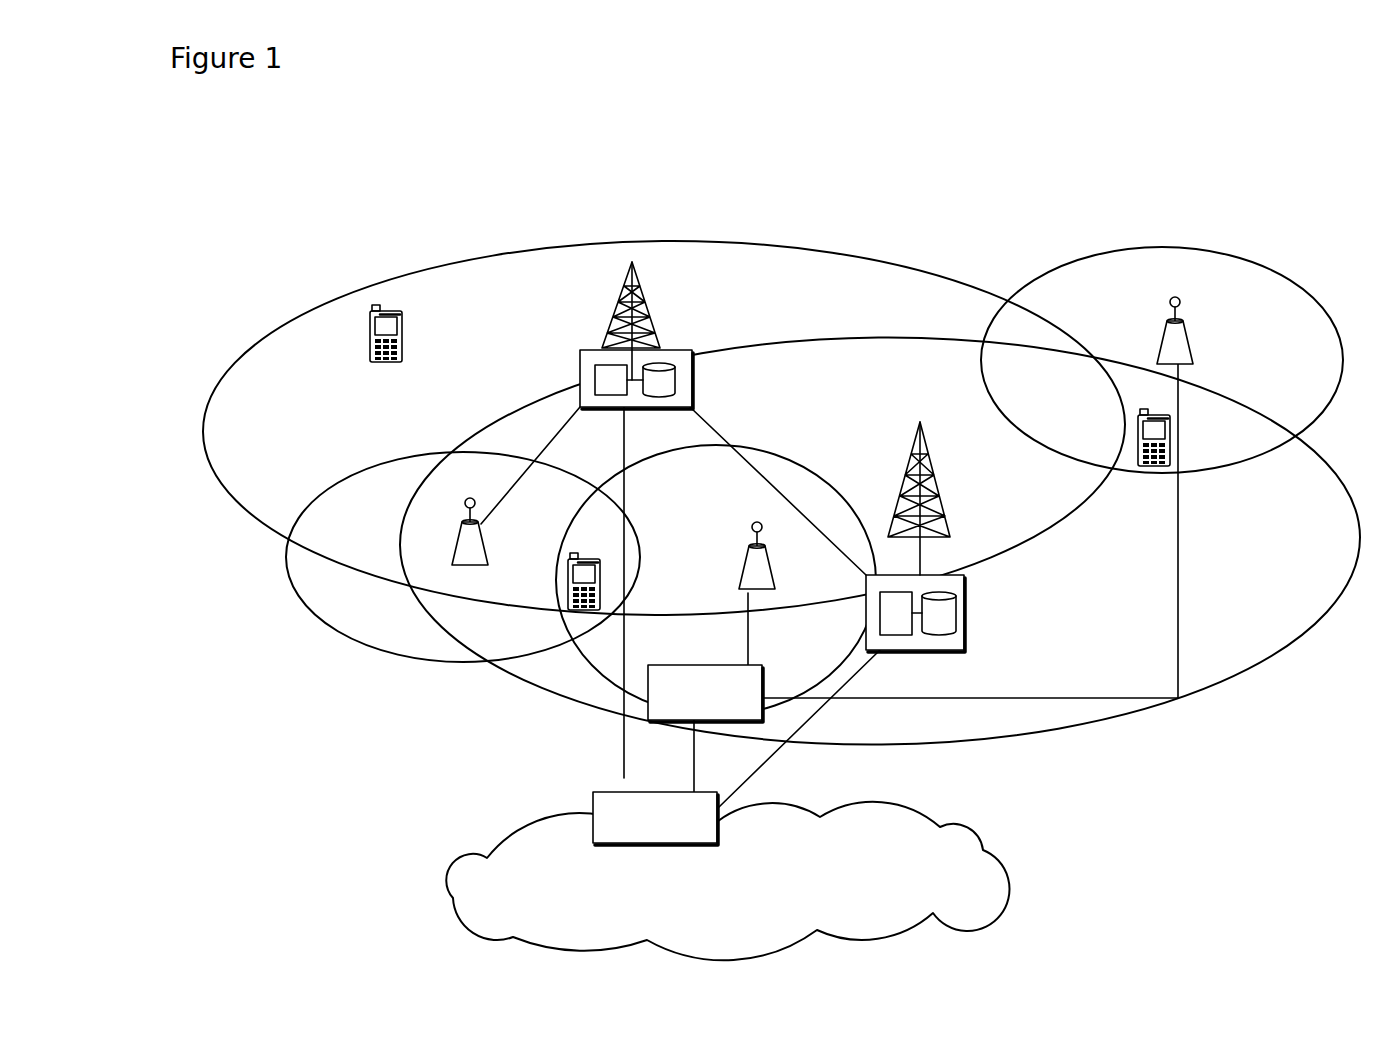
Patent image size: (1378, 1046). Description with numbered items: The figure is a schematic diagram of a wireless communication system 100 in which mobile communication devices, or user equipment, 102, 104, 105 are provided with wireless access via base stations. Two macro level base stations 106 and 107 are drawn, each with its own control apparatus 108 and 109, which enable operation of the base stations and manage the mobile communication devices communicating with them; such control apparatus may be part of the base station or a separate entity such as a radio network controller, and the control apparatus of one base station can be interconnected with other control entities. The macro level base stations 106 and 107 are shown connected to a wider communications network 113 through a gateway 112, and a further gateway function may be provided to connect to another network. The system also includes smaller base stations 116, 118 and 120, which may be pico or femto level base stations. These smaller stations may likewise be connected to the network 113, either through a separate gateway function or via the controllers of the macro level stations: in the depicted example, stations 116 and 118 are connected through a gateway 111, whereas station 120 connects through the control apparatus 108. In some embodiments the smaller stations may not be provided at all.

The wireless communication system 100 is at (296, 293).
The mobile communication device 102 is at (368, 352).
The mobile communication device 104 is at (569, 588).
The mobile communication device 105 is at (1152, 470).
The macro level base station 106 is at (615, 312).
The macro level base station 107 is at (940, 501).
The control apparatus 108 is at (579, 367).
The control apparatus 109 is at (958, 641).
The gateway 111 is at (657, 697).
The gateway 112 is at (594, 793).
The wider communications network 113 is at (518, 853).
The smaller base station 116 is at (1160, 333).
The smaller base station 118 is at (756, 578).
The smaller base station 120 is at (458, 536).